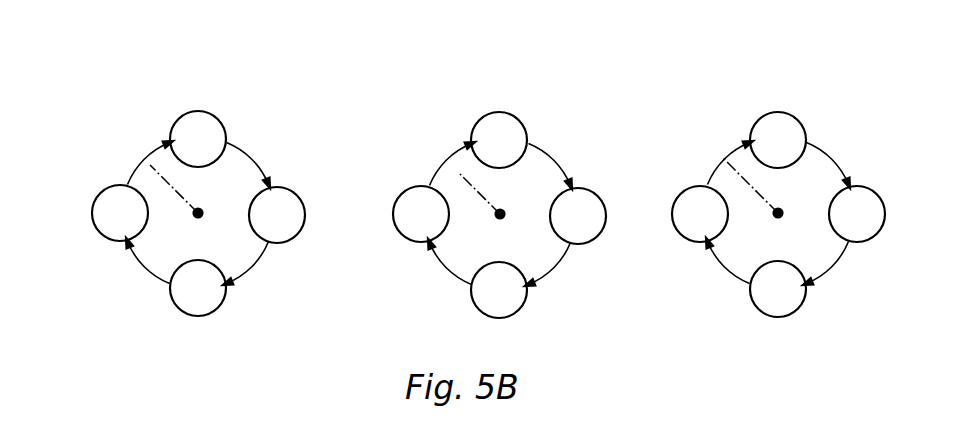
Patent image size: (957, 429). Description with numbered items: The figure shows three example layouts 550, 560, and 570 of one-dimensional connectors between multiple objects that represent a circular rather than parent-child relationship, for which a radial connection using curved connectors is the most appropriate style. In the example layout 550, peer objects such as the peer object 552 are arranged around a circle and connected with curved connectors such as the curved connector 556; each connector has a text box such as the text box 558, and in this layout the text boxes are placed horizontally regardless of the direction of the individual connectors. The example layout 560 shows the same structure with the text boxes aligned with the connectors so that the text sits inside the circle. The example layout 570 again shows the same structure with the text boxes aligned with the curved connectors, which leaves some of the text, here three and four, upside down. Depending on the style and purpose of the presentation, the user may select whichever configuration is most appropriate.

The example layout 550 is at (238, 78).
The peer object 552 is at (190, 111).
The curved connector 556 is at (146, 272).
The text box 558 is at (116, 150).
The example layout 560 is at (491, 79).
The example layout 570 is at (801, 79).